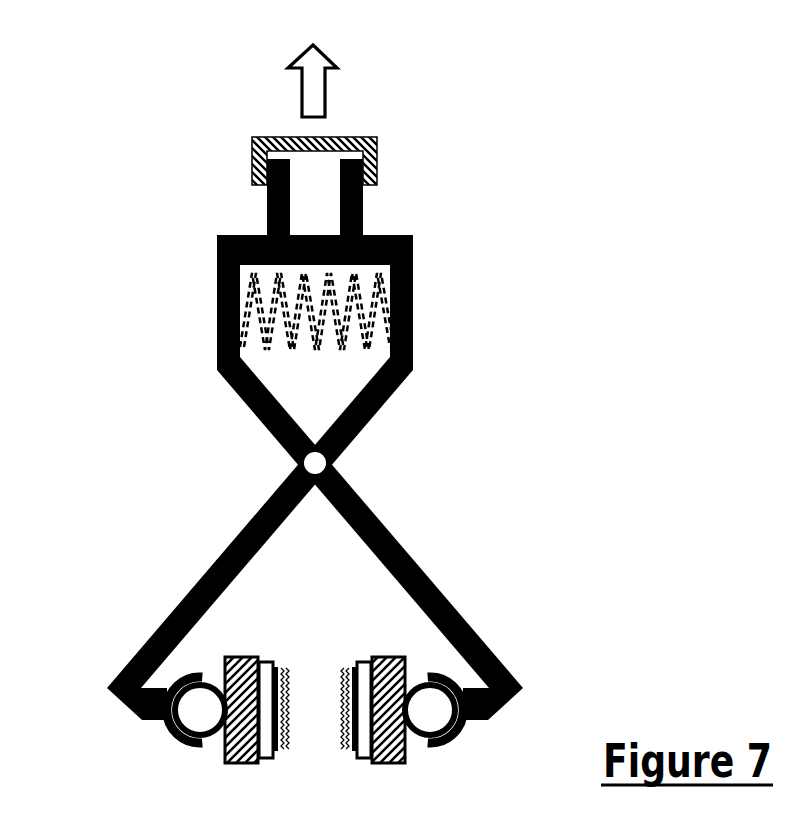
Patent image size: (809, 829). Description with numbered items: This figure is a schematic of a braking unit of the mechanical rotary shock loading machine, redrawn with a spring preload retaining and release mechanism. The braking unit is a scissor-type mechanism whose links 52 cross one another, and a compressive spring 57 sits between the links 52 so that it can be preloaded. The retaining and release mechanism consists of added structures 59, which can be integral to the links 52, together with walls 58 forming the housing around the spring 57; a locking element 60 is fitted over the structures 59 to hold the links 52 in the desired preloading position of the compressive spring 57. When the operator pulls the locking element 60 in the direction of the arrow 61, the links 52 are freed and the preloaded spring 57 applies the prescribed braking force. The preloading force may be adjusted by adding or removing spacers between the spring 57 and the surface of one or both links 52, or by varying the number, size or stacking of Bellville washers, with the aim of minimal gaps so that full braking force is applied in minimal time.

The links 52 is at (208, 553).
The compressive spring 57 is at (332, 312).
The housing walls 58 is at (207, 275).
The added structures 59 is at (252, 213).
The locking element 60 is at (380, 147).
The arrow 61 is at (336, 84).